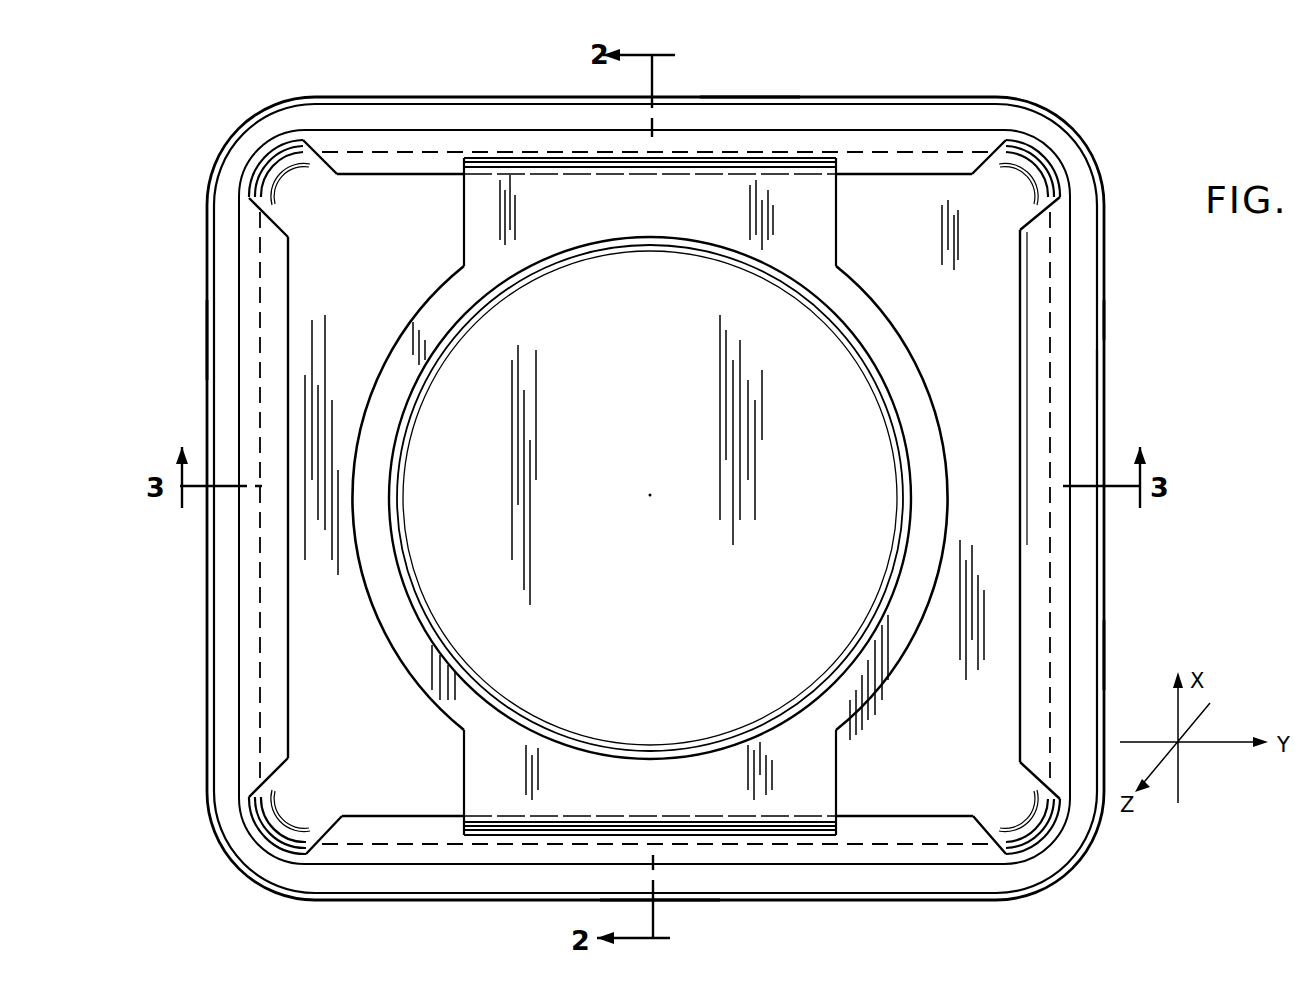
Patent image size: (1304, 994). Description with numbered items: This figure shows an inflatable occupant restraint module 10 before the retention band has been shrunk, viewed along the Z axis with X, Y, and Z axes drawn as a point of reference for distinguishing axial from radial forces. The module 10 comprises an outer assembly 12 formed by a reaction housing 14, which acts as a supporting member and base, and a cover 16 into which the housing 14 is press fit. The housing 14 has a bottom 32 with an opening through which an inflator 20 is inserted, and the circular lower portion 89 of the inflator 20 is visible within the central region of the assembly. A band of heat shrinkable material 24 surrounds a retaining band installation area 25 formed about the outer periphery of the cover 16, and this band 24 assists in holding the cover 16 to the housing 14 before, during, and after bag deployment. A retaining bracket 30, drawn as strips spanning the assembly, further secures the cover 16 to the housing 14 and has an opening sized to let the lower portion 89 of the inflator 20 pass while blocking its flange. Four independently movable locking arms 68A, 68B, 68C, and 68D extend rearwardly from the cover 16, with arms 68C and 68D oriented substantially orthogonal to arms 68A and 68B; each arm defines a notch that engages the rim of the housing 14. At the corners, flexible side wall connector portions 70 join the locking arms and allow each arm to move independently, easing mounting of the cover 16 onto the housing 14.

The inflatable occupant restraint module 10 is at (1112, 150).
The outer assembly 12 is at (181, 185).
The reaction housing 14 is at (386, 270).
The cover 16 is at (892, 118).
The inflator 20 is at (661, 480).
The band of heat shrinkable material 24 is at (1105, 322).
The retaining band installation area 25 is at (1098, 380).
The retaining bracket 30 is at (650, 205).
The bottom 32 is at (1012, 588).
The locking arm 68A is at (697, 873).
The locking arm 68B is at (747, 115).
The locking arm 68C is at (228, 340).
The locking arm 68D is at (1090, 658).
The flexible side wall connector portion 70 is at (253, 142).
The lower portion 89 is at (840, 358).